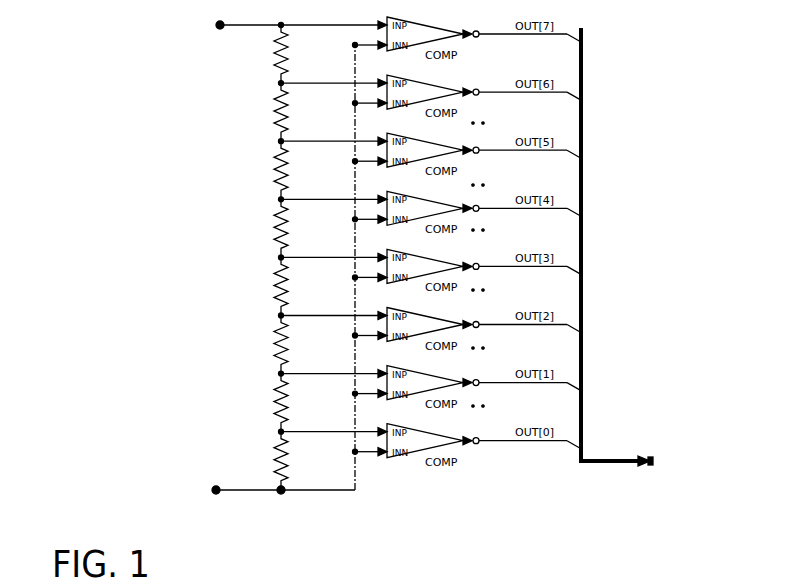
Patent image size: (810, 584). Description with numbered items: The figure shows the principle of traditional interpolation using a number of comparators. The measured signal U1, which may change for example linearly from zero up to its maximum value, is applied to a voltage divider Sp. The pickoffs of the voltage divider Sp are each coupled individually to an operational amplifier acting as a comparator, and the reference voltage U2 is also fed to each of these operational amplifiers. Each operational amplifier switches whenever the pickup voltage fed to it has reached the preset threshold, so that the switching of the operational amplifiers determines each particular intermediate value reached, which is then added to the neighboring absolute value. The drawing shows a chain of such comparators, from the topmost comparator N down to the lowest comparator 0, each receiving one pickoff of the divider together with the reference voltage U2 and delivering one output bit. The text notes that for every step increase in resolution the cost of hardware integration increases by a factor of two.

The measured signal U1 is at (232, 25).
The reference voltage U2 is at (269, 273).
The voltage divider Sp is at (255, 73).
The comparator N is at (431, 41).
The comparator 0 is at (431, 454).